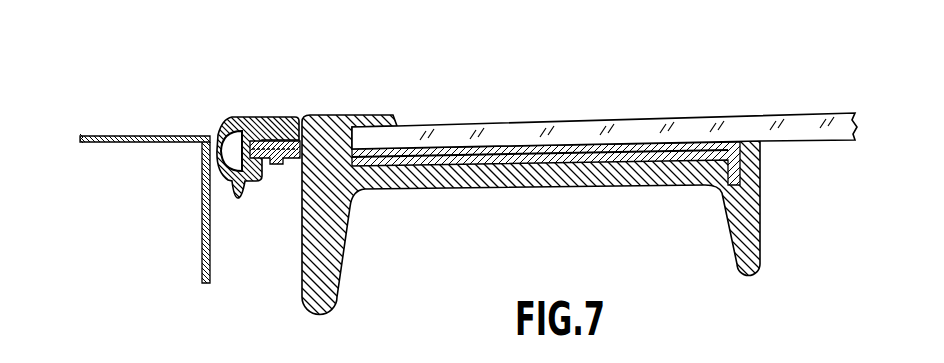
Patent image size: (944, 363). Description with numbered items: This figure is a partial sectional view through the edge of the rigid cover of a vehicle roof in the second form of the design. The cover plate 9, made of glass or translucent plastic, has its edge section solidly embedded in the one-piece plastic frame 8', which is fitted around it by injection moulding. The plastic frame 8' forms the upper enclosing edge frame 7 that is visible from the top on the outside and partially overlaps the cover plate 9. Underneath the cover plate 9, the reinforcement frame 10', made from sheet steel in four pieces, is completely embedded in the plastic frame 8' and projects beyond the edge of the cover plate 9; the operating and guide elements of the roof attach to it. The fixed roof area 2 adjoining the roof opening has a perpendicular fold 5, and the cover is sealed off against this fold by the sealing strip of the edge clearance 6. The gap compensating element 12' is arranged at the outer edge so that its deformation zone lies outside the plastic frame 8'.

The fixed roof area 2 is at (137, 135).
The perpendicular fold 5 is at (202, 239).
The sealing strip of the edge clearance 6 is at (227, 109).
The upper enclosing edge frame 7 is at (373, 117).
The plastic frame 8' is at (531, 170).
The cover plate 9 is at (675, 123).
The reinforcement frame 10' is at (546, 195).
The gap compensating element 12' is at (275, 203).